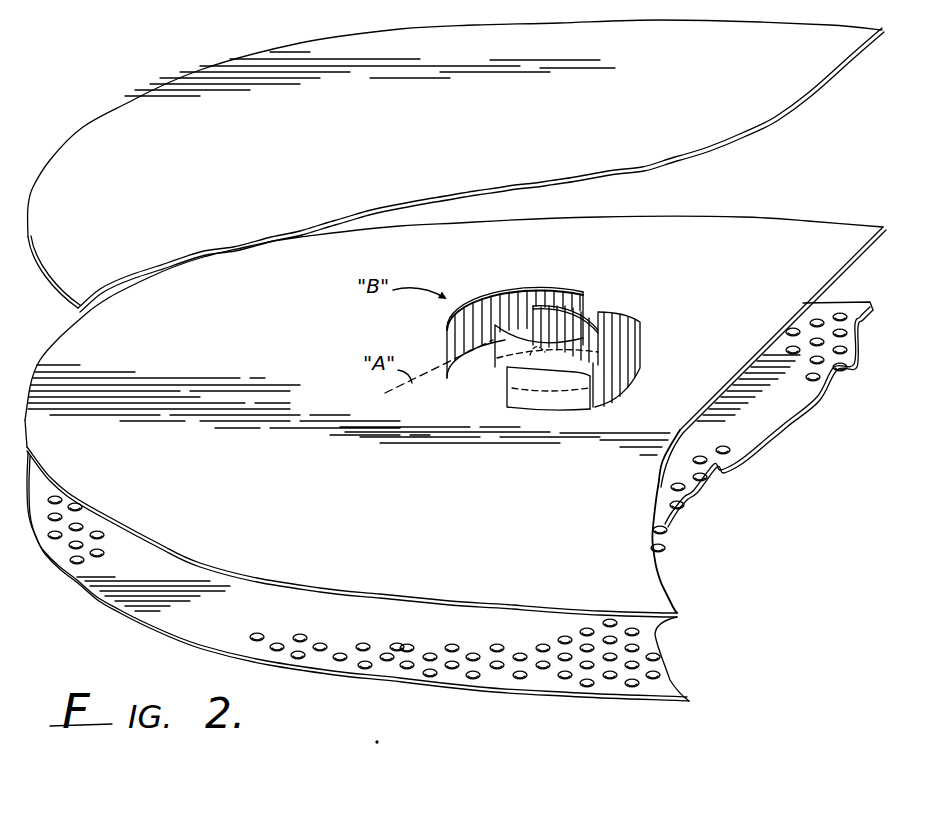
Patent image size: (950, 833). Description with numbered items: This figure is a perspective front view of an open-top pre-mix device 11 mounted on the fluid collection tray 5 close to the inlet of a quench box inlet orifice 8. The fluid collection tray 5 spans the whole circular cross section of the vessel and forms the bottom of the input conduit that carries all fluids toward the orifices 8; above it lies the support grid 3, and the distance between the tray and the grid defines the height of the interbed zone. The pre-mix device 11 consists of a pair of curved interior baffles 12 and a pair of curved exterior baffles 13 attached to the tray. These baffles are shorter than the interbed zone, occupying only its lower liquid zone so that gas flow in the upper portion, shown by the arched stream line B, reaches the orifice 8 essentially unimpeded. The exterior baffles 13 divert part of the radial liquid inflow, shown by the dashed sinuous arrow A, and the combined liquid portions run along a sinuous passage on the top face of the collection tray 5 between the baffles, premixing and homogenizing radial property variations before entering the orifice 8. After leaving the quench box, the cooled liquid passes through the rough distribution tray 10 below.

The support grid 3 is at (82, 136).
The fluid collection tray 5 is at (63, 344).
The quench box inlet orifice 8 is at (597, 408).
The rough distribution tray 10 is at (688, 681).
The pre-mix device 11 is at (470, 284).
The interior baffle 12 is at (593, 313).
The exterior baffle 13 is at (503, 290).